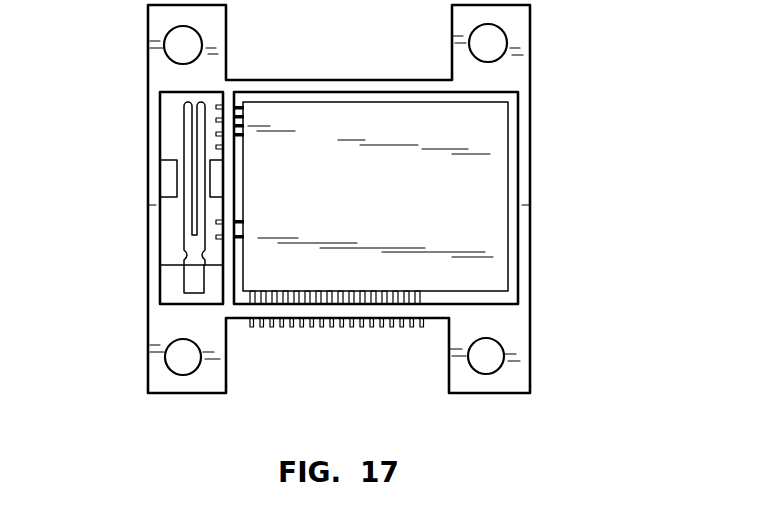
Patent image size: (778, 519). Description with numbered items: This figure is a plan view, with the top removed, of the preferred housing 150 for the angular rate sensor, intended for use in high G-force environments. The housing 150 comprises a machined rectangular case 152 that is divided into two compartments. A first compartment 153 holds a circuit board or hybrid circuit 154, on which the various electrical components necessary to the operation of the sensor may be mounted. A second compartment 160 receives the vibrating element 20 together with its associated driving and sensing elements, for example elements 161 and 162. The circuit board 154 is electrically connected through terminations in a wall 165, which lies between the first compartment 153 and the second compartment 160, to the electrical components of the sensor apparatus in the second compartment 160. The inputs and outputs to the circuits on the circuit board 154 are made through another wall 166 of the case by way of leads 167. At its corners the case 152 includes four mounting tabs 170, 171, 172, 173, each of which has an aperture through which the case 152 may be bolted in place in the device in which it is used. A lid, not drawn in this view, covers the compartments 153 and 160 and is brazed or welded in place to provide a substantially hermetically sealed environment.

The housing 150 is at (562, 220).
The machined rectangular case 152 is at (287, 80).
The first compartment 153 is at (363, 80).
The circuit board 154 is at (343, 217).
The second compartment 160 is at (168, 127).
The driving and sensing element 161 is at (168, 177).
The driving and sensing element 162 is at (217, 183).
The wall 165 is at (228, 147).
The wall 166 is at (437, 320).
The leads 167 is at (347, 328).
The mounting tab 170 is at (180, 385).
The mounting tab 171 is at (500, 385).
The mounting tab 172 is at (517, 38).
The mounting tab 173 is at (157, 26).
The vibrating element 20 is at (174, 239).